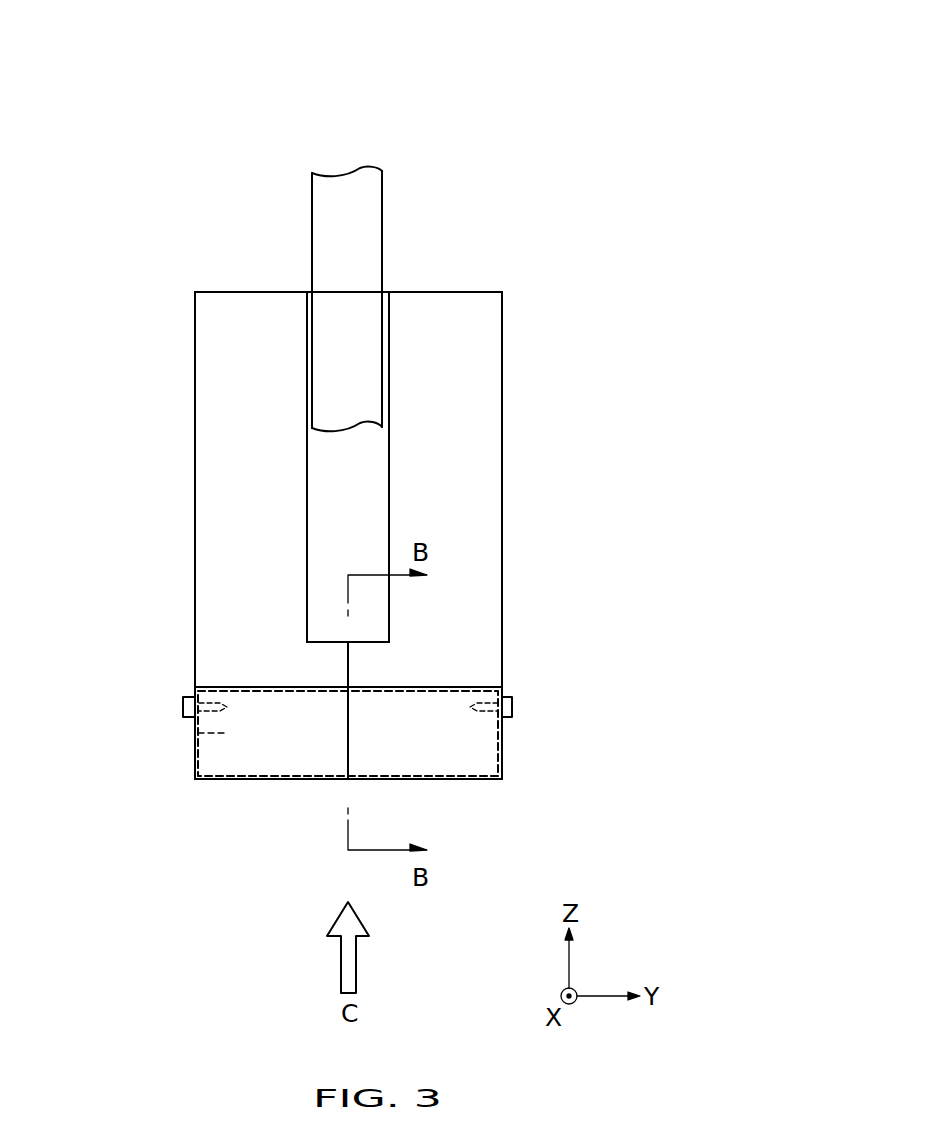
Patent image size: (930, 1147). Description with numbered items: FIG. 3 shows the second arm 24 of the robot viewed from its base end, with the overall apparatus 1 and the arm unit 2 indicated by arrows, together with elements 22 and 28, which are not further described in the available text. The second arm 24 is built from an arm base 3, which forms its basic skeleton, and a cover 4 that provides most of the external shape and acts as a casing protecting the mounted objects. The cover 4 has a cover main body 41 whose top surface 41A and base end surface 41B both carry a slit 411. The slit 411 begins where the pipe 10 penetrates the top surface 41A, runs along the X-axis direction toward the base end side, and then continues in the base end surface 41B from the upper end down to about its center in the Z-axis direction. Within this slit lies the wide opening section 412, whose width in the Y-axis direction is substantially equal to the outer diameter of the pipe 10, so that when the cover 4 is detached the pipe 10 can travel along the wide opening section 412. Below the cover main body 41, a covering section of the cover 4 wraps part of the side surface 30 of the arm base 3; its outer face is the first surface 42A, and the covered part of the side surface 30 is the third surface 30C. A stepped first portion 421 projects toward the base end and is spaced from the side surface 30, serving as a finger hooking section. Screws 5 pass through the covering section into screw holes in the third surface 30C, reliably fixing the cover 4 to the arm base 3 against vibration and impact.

The apparatus 1 is at (535, 84).
The unit 2 is at (464, 203).
The arm base 3 is at (223, 735).
The cover 4 is at (477, 292).
The screw 5 is at (185, 703).
The pipe 10 is at (362, 224).
The side portion 22 is at (531, 415).
The second arm 24 is at (512, 330).
The center line portion 28 is at (372, 668).
The side surface 30 is at (502, 745).
The third surface 30C is at (277, 745).
The cover main body 41 is at (220, 396).
The top surface 41A is at (228, 291).
The base end surface 41B is at (220, 575).
The slit 411 is at (348, 291).
The wide opening section 412 is at (366, 484).
The first surface 42A is at (195, 737).
The first portion 421 is at (502, 733).